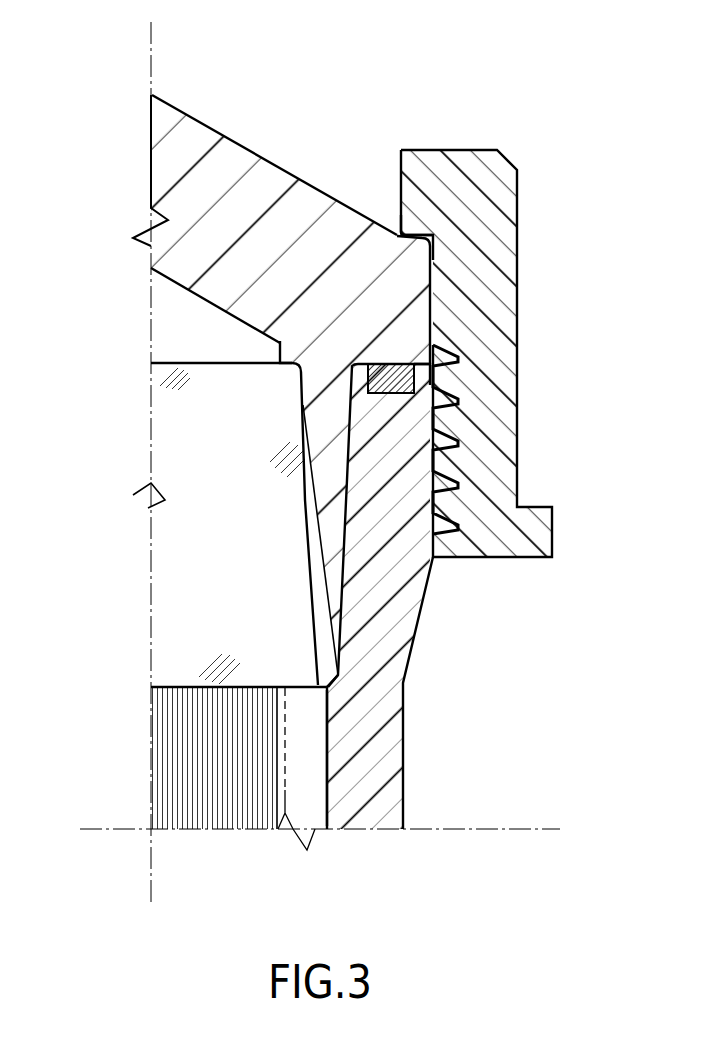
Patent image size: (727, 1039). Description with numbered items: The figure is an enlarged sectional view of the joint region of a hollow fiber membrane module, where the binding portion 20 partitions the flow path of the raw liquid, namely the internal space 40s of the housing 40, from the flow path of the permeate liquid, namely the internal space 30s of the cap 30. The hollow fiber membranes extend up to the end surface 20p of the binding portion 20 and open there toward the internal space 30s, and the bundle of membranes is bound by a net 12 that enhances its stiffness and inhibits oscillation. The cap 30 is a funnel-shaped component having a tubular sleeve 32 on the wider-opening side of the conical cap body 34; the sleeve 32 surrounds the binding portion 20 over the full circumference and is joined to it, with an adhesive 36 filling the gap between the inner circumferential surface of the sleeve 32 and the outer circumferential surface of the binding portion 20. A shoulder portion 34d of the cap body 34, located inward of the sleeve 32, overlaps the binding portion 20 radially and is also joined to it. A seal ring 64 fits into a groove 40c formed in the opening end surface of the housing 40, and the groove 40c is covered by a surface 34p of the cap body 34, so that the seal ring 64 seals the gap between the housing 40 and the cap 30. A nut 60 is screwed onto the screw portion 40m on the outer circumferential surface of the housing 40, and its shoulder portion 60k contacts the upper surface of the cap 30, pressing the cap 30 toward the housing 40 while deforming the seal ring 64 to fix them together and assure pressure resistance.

The net 12 is at (285, 790).
The binding portion 20 is at (170, 434).
The end surface of the binding portion 20p is at (186, 362).
The cap 30 is at (178, 110).
The internal space of the cap 30s is at (173, 315).
The sleeve 32 is at (322, 548).
The cap body 34 is at (262, 183).
The shoulder portion 34d is at (282, 345).
The surface of the cap 34p is at (418, 378).
The adhesive 36 is at (315, 603).
The housing 40 is at (365, 783).
The groove 40c is at (378, 400).
The screw portion 40m is at (440, 530).
The internal space of the housing 40s is at (308, 747).
The nut 60 is at (495, 303).
The shoulder portion of the nut 60k is at (408, 228).
The seal ring 64 is at (380, 386).